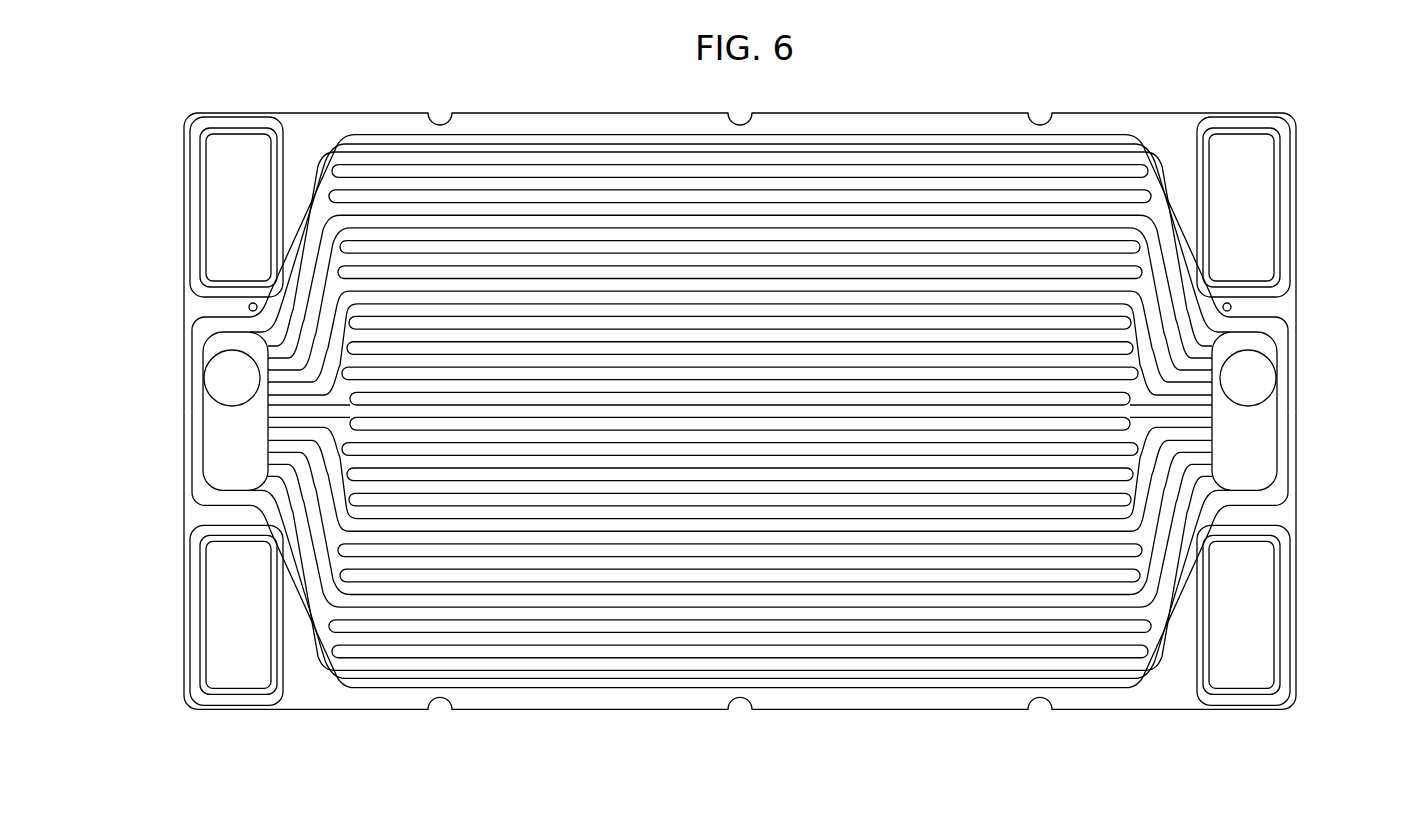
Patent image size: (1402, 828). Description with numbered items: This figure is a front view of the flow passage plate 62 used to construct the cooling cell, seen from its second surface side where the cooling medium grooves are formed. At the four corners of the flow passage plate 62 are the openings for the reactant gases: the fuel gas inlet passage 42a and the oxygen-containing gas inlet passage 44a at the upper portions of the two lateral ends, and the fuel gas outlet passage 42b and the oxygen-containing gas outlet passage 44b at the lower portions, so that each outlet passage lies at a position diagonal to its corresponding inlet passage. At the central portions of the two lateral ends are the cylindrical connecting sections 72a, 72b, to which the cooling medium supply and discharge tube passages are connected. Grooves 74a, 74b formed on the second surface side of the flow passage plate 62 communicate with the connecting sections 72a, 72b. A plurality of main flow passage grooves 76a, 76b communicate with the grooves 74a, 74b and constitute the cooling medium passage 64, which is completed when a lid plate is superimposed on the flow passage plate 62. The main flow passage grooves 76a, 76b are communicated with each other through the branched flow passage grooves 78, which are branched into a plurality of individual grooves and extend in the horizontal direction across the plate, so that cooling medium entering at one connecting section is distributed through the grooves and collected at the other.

The flow passage plate 62 is at (930, 84).
The cooling medium passage 64 is at (806, 148).
The branched flow passage grooves 78 is at (528, 236).
The fuel gas inlet passage 42a is at (228, 246).
The fuel gas outlet passage 42b is at (1262, 612).
The oxygen-containing gas inlet passage 44a is at (1262, 211).
The oxygen-containing gas outlet passage 44b is at (228, 615).
The connecting section 72a is at (1248, 399).
The connecting section 72b is at (232, 399).
The groove 74a is at (1258, 433).
The groove 74b is at (220, 433).
The main flow passage grooves 76a is at (1200, 346).
The main flow passage grooves 76b is at (262, 479).